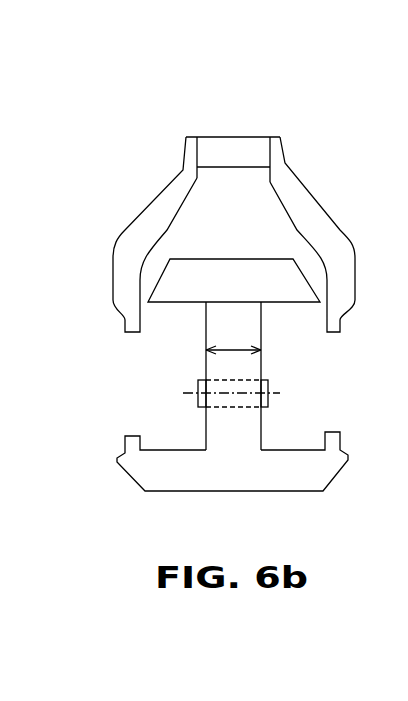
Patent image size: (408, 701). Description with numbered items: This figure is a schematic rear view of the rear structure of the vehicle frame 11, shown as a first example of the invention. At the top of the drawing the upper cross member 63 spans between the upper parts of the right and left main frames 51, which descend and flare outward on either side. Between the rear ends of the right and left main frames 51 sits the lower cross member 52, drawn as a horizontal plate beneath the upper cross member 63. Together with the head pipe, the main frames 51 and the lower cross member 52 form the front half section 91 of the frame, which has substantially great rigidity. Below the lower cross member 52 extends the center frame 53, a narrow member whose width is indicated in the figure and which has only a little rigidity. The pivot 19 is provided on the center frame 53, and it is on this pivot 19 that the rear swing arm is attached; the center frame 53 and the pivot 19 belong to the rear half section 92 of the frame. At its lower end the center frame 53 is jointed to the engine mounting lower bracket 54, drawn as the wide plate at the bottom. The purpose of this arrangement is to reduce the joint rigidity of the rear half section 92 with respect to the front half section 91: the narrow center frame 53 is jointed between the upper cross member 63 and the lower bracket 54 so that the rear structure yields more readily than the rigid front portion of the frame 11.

The frame 11 is at (145, 108).
The upper cross member 63 is at (238, 150).
The main frame 51 is at (155, 217).
The front half section of the frame 91 is at (108, 253).
The rear half section of the frame 92 is at (188, 325).
The lower cross member 52 is at (229, 266).
The center frame 53 is at (203, 368).
The pivot 19 is at (200, 405).
The engine mounting lower bracket 54 is at (145, 478).